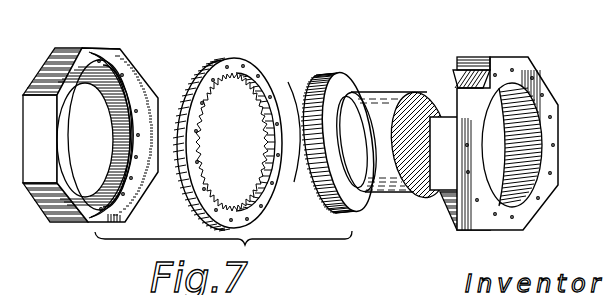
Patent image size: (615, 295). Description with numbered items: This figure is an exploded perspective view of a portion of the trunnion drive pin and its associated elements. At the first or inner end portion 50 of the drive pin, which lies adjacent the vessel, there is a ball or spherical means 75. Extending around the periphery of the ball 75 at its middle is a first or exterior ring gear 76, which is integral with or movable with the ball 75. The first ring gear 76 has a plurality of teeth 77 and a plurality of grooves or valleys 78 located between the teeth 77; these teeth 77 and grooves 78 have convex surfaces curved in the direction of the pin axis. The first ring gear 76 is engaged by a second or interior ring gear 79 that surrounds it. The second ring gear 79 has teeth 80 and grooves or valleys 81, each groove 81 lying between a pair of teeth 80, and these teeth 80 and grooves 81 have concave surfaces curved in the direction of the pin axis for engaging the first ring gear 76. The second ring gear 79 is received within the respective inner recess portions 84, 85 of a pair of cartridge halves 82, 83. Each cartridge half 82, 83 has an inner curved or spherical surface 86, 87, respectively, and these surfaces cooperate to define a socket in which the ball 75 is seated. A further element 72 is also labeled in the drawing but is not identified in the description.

The first end portion 50 is at (427, 127).
The housing 72 is at (150, 0).
The ball 75 is at (358, 95).
The first ring gear 76 is at (338, 120).
The teeth 77 is at (310, 82).
The grooves 78 is at (289, 84).
The second ring gear 79 is at (236, 122).
The teeth 80 is at (264, 166).
The grooves 81 is at (266, 158).
The cartridge half 82 is at (109, 113).
The cartridge half 83 is at (515, 139).
The inner recess portion 84 is at (139, 89).
The inner recess portion 85 is at (508, 137).
The inner spherical surface 86 is at (120, 115).
The inner spherical surface 87 is at (537, 152).